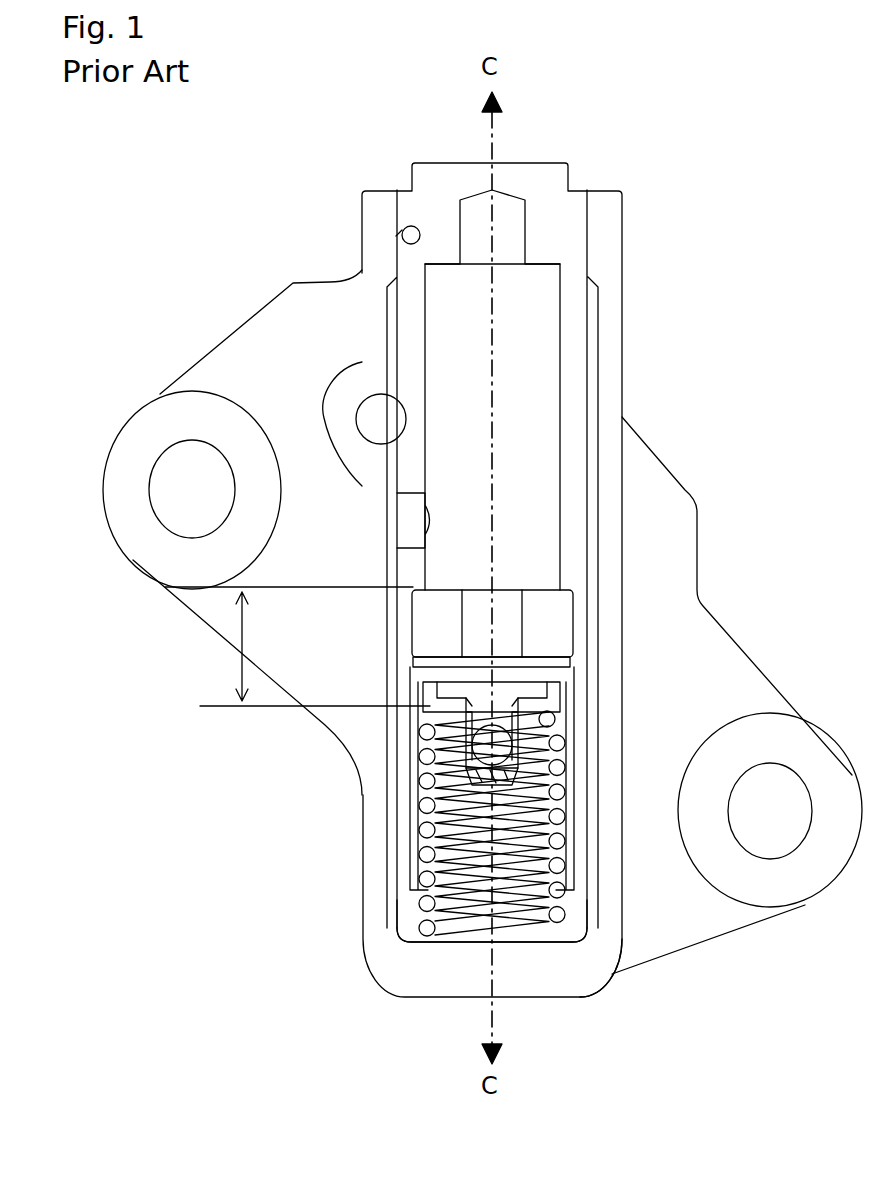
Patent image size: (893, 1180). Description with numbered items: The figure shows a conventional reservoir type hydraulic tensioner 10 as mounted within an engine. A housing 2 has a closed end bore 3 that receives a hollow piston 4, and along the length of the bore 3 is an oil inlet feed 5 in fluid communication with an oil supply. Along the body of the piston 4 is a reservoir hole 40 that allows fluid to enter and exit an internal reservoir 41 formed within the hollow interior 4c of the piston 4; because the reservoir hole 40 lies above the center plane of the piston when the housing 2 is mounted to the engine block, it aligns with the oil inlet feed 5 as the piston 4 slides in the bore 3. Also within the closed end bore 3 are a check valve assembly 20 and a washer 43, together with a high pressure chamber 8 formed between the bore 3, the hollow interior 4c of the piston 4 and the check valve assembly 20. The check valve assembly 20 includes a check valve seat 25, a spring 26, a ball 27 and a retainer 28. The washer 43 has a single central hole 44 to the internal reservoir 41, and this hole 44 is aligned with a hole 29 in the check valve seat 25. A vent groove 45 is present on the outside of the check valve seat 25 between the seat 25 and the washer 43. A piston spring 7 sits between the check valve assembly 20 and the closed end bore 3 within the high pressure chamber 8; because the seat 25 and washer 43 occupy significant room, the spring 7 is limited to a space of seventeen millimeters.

The reservoir type hydraulic tensioner 10 is at (166, 200).
The hollow piston 4 is at (571, 190).
The hollow interior 4c is at (560, 302).
The housing 2 is at (233, 357).
The check valve assembly 20 is at (692, 630).
The oil inlet feed 5 is at (366, 395).
The closed end bore 3 is at (585, 905).
The reservoir hole 40 is at (415, 517).
The internal reservoir 41 is at (531, 490).
The washer 43 is at (548, 622).
The single central hole 44 is at (518, 618).
The hole 29 is at (497, 682).
The vent groove 45 is at (437, 663).
The check valve seat 25 is at (538, 693).
The retainer 28 is at (520, 748).
The ball 27 is at (505, 757).
The spring 26 is at (512, 765).
The piston spring 7 is at (427, 823).
The high pressure chamber 8 is at (406, 922).